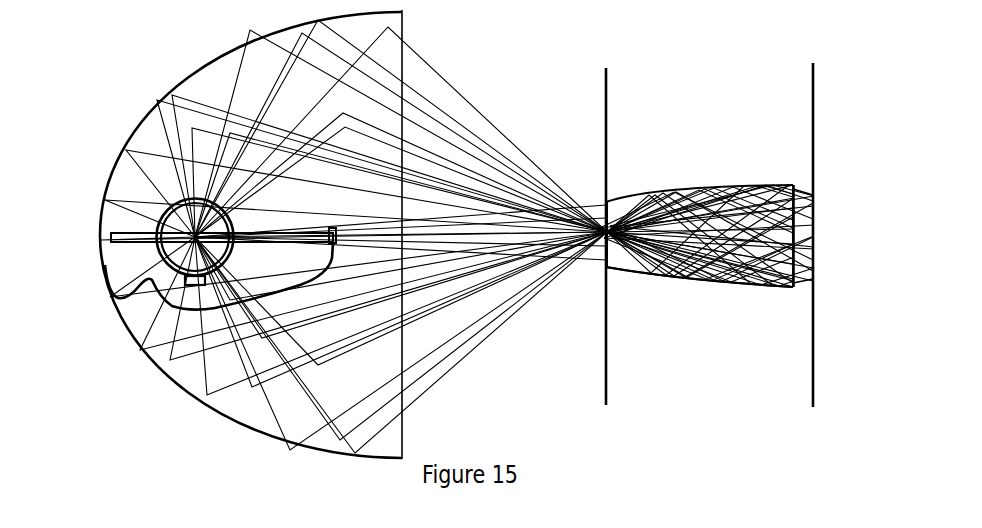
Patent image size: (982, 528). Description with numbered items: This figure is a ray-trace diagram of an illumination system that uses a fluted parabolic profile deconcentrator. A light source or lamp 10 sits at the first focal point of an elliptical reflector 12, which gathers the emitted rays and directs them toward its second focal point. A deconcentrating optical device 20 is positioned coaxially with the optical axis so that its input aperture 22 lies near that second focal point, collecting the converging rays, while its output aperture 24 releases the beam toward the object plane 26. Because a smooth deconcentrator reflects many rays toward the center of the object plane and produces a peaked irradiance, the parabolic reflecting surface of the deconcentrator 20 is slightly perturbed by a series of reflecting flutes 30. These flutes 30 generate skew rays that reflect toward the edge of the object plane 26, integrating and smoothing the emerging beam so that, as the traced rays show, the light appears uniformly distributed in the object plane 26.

The light source 10 is at (172, 276).
The elliptical reflector 12 is at (134, 133).
The deconcentrating optical device 20 is at (718, 189).
The input aperture 22 is at (602, 212).
The output aperture 24 is at (806, 191).
The object plane 26 is at (816, 82).
The flutes 30 is at (668, 272).